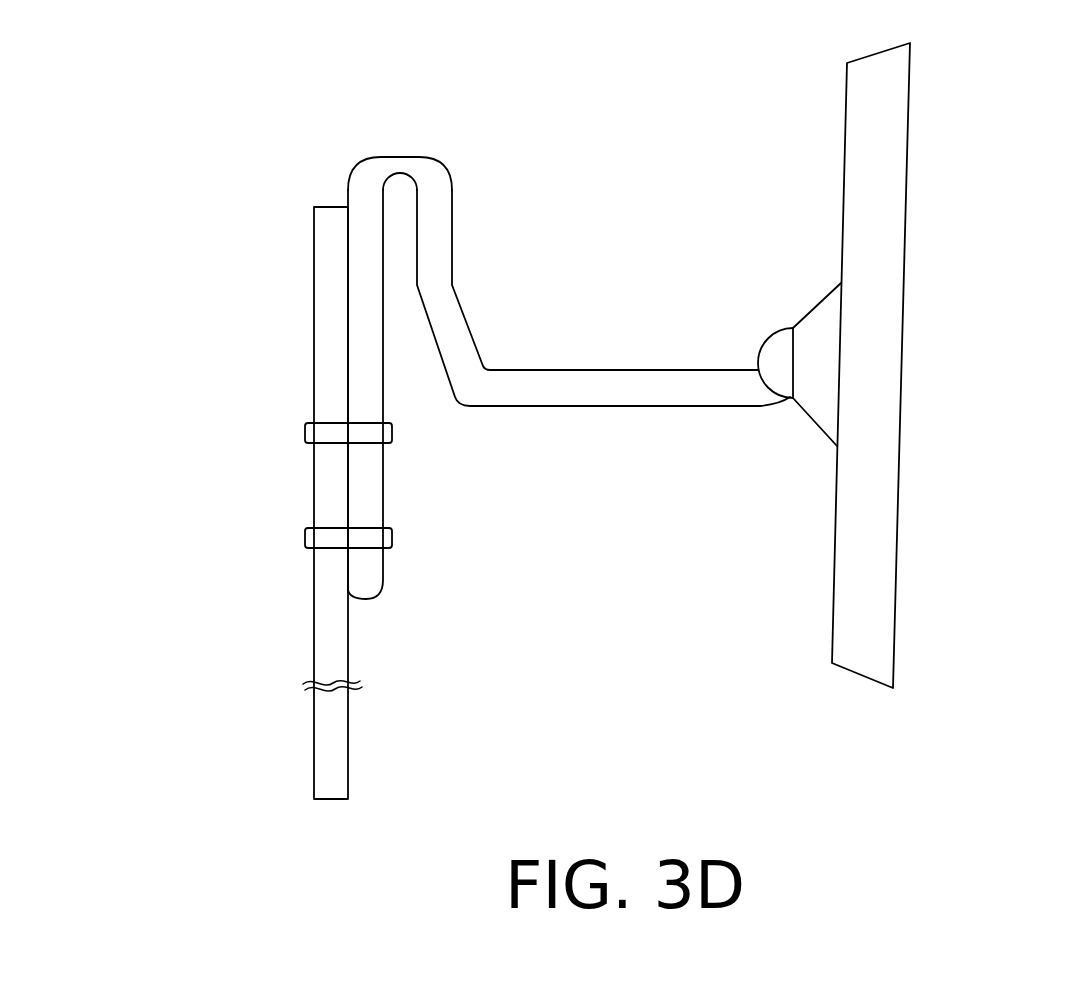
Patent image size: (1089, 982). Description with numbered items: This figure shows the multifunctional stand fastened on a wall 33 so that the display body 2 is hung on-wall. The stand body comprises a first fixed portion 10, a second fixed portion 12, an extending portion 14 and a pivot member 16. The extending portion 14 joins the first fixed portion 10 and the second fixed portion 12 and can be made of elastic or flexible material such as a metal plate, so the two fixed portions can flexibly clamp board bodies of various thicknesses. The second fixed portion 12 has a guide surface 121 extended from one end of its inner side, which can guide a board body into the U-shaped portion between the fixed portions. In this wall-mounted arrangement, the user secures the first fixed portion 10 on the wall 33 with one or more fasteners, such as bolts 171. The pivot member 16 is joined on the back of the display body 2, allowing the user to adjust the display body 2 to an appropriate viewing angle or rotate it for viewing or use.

The display body 2 is at (902, 365).
The first fixed portion 10 is at (484, 306).
The second fixed portion 12 is at (452, 238).
The guide surface 121 is at (467, 327).
The extending portion 14 is at (398, 165).
The pivot member 16 is at (773, 353).
The wall 33 is at (314, 741).
The bolts 171 is at (305, 432).